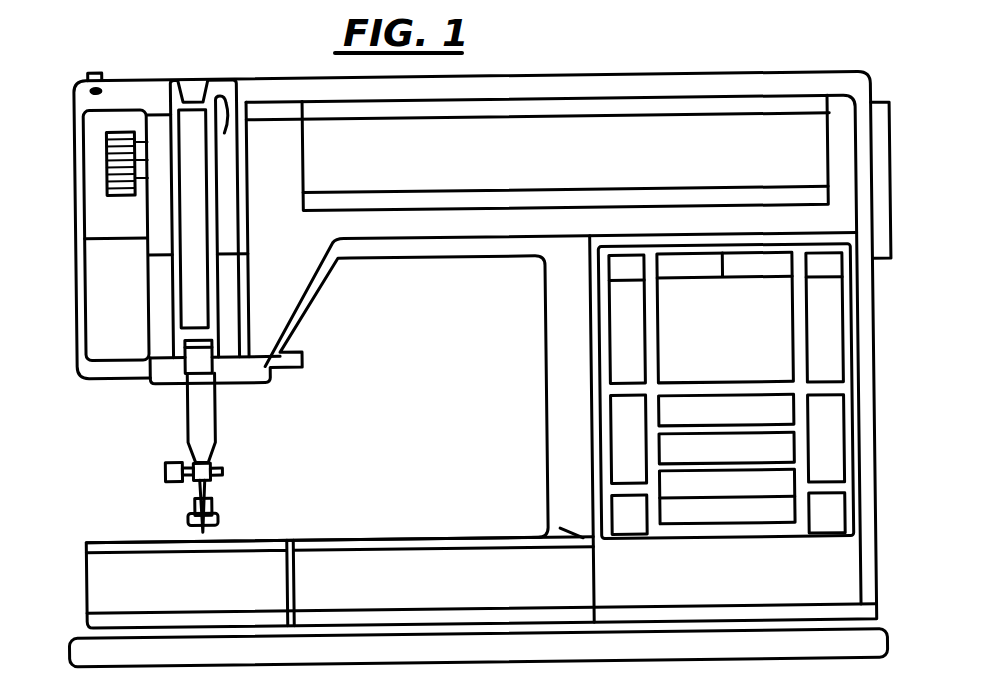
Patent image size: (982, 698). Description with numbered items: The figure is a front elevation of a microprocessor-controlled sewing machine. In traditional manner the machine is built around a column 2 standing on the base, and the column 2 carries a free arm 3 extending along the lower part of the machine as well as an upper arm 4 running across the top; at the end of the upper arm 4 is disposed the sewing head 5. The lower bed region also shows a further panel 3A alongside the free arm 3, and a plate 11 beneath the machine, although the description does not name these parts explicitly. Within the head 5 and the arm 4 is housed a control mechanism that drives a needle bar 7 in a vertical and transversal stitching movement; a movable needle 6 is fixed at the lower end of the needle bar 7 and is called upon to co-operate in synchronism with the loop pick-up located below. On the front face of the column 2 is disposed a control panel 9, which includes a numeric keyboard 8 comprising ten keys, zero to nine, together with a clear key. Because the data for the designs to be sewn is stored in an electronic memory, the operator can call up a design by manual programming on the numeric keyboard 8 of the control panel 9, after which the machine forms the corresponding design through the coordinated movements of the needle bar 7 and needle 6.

The column 2 is at (875, 388).
The free arm 3 is at (443, 581).
The auxiliary bed panel 3A is at (187, 584).
The upper arm 4 is at (565, 152).
The sewing head 5 is at (116, 235).
The needle 6 is at (191, 501).
The needle bar 7 is at (189, 412).
The numeric keyboard 8 is at (773, 338).
The control panel 9 is at (850, 463).
The base plate 11 is at (121, 656).